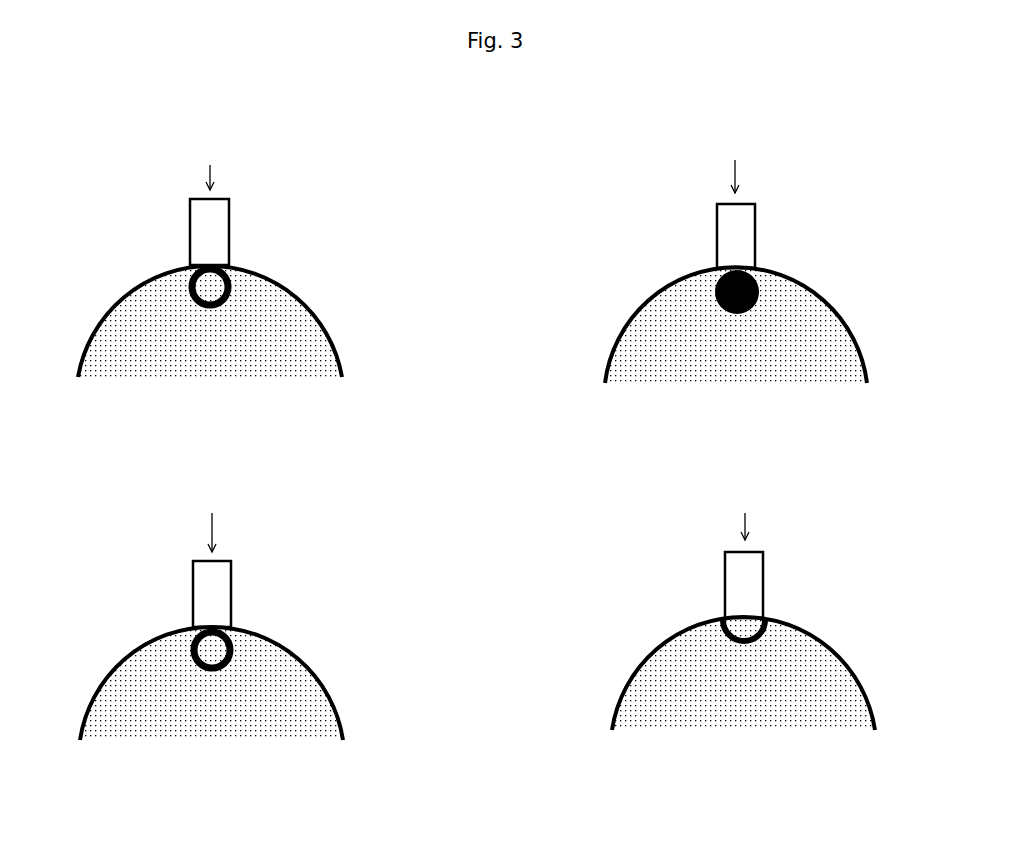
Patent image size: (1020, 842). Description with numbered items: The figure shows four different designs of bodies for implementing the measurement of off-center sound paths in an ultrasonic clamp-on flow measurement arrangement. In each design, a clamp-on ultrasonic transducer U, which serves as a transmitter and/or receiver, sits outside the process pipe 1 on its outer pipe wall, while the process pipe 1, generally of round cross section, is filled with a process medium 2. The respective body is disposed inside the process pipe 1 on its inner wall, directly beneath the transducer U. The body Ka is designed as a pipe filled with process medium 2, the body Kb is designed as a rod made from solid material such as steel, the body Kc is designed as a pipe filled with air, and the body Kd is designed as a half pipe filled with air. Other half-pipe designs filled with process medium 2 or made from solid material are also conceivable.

The process pipe 1 is at (115, 303).
The process medium 2 is at (300, 323).
The clamp-on ultrasonic transducer U is at (478, 345).
The body designed as a pipe filled with process medium Ka is at (235, 280).
The body designed as a rod made from solid material Kb is at (762, 285).
The body designed as a pipe filled with air Kc is at (240, 642).
The body designed as a half pipe filled with air Kd is at (773, 630).